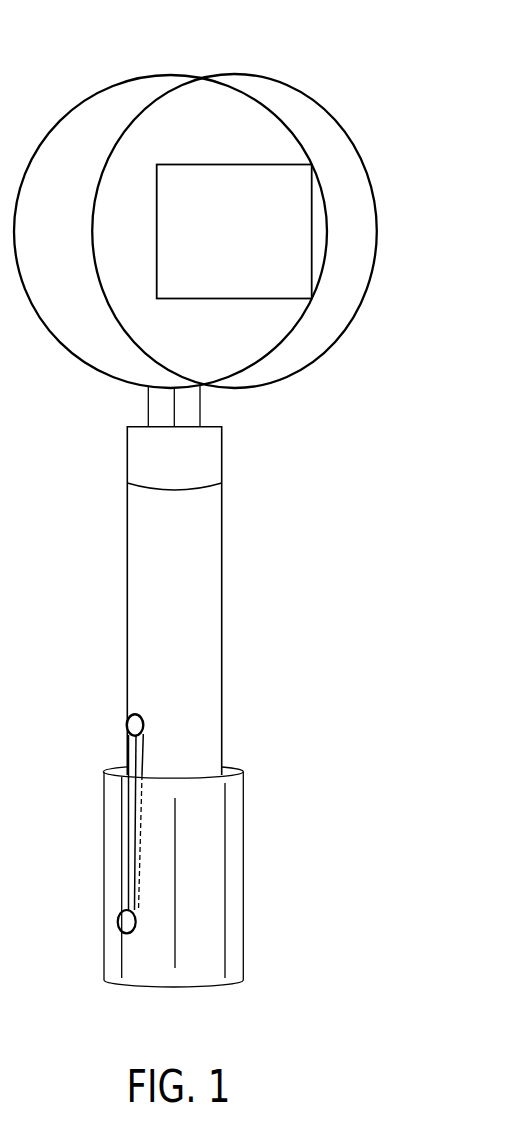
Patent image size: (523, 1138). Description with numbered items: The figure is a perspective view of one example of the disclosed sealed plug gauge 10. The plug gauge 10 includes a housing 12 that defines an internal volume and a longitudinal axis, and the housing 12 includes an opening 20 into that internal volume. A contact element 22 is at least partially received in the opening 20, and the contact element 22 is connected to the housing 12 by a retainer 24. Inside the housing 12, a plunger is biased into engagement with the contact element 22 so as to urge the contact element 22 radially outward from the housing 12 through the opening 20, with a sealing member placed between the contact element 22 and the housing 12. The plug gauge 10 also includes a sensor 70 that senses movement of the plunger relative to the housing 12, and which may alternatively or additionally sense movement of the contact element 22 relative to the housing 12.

The plug gauge 10 is at (245, 501).
The housing 12 is at (222, 565).
The opening 20 is at (134, 937).
The contact element 22 is at (118, 920).
The retainer 24 is at (133, 802).
The sensor 70 is at (252, 74).